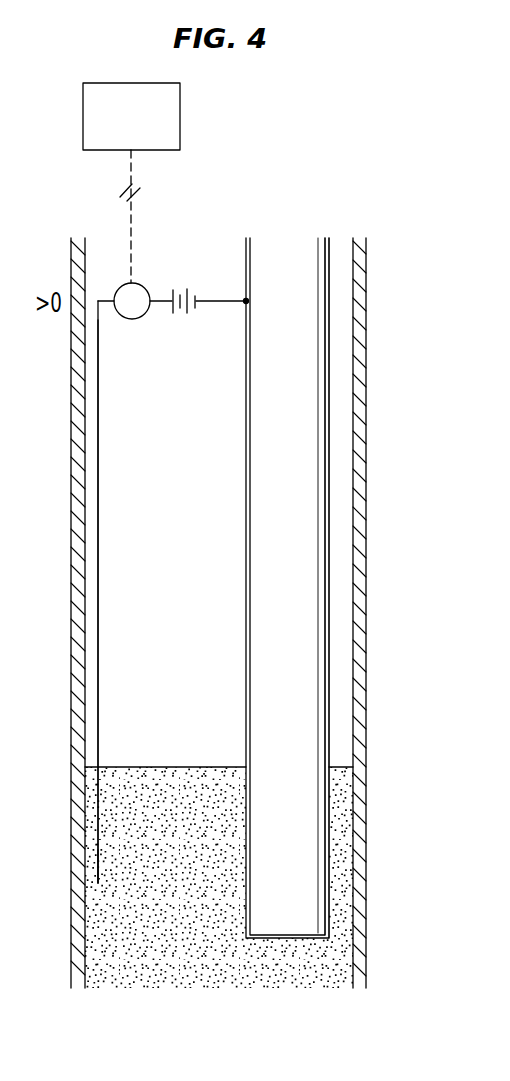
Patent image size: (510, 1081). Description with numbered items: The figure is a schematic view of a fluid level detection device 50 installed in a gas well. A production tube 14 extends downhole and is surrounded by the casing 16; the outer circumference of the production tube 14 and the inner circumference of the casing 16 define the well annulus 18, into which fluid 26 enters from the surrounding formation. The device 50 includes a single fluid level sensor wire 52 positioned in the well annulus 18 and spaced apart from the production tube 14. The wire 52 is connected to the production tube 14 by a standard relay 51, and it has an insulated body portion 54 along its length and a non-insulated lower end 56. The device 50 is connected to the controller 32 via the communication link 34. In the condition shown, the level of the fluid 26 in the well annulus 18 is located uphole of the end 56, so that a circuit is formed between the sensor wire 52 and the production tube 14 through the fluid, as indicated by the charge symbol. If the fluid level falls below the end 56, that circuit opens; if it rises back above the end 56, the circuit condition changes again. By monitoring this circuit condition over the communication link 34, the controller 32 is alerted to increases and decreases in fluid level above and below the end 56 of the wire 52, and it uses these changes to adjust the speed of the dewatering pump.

The production tube 14 is at (303, 592).
The casing 16 is at (363, 330).
The well annulus 18 is at (342, 503).
The fluid 26 is at (186, 834).
The controller 32 is at (146, 131).
The communication link 34 is at (128, 218).
The fluid level detection device 50 is at (273, 169).
The relay 51 is at (164, 279).
The fluid level sensor wire 52 is at (106, 387).
The insulated body portion 54 is at (100, 431).
The non-insulated lower end 56 is at (98, 873).